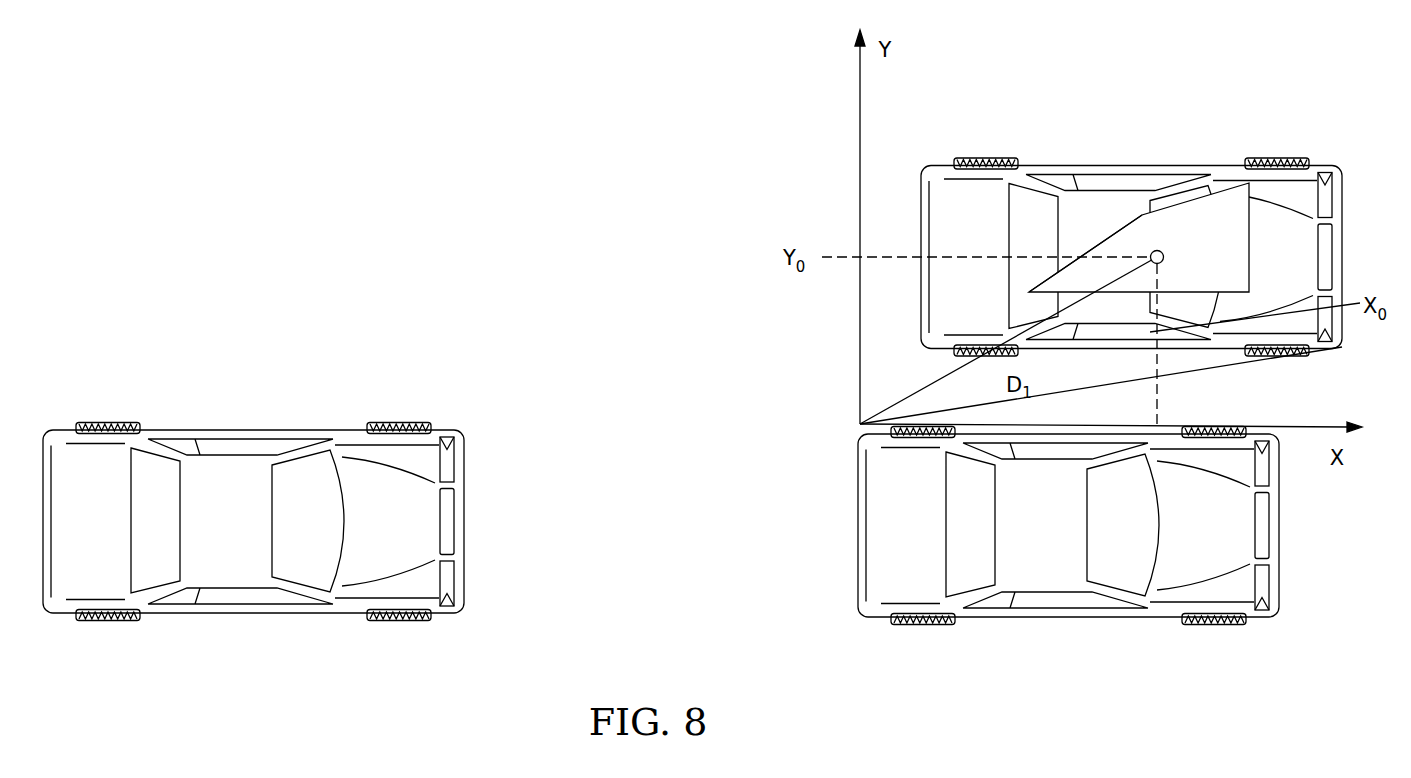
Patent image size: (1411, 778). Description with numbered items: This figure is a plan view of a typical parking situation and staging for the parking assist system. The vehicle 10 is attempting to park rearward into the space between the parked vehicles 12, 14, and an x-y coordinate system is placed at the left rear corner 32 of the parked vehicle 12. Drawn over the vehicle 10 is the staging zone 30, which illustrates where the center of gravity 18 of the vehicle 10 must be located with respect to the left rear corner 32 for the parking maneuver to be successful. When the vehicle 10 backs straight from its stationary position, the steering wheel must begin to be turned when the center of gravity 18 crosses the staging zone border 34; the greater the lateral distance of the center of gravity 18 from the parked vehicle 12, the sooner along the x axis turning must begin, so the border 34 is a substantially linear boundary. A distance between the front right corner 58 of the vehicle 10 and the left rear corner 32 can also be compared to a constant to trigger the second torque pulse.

The vehicle 10 is at (1115, 202).
The parked vehicle 12 is at (1240, 605).
The parked vehicle 14 is at (158, 436).
The center of gravity 18 is at (1157, 250).
The staging zone 30 is at (1225, 197).
The left rear corner 32 is at (860, 424).
The staging zone border 34 is at (1097, 242).
The front right corner 58 is at (1342, 350).